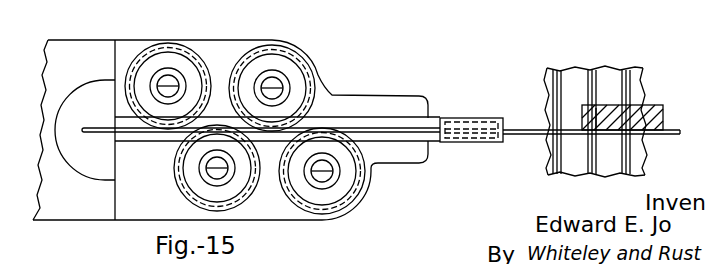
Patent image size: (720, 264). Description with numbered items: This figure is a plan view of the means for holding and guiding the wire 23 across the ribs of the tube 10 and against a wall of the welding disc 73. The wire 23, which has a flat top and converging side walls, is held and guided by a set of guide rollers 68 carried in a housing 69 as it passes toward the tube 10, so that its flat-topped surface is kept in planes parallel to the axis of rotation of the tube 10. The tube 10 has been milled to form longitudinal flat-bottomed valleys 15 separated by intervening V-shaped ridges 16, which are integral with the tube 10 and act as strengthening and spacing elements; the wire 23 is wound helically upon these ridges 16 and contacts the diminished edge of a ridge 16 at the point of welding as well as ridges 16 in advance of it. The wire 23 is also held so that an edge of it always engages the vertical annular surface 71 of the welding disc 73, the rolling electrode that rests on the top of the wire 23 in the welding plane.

The tube 10 is at (638, 154).
The flat-bottomed valleys 15 is at (572, 83).
The ridges 16 is at (595, 76).
The wire 23 is at (517, 130).
The guide rollers 68 is at (253, 59).
The housing extension 69 is at (357, 96).
The vertical annular surface 71 is at (600, 106).
The welding disc 73 is at (663, 112).